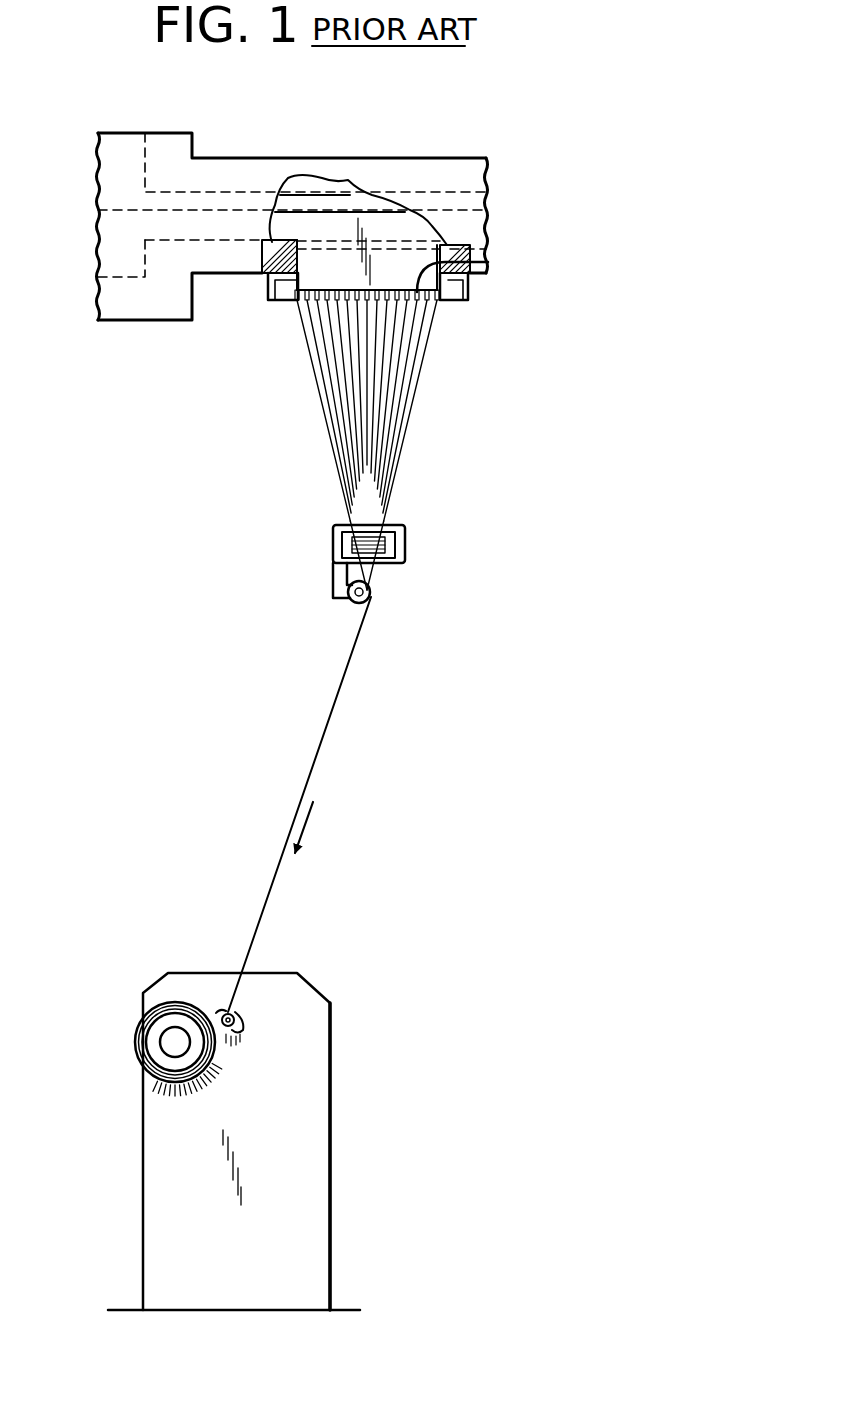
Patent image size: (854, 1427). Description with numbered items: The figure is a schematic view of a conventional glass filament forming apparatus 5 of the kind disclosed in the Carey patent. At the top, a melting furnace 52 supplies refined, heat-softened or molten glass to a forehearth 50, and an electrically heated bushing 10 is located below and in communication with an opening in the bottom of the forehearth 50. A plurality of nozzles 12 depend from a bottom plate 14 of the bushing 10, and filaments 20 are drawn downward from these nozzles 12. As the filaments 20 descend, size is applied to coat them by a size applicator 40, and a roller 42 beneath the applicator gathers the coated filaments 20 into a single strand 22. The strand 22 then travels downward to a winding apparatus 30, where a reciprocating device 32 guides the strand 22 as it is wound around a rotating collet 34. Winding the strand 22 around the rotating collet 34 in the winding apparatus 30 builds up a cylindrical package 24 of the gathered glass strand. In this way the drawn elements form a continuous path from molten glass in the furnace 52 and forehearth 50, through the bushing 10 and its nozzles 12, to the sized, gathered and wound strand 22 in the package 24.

The filament forming apparatus 5 is at (125, 486).
The bushing 10 is at (472, 335).
The nozzles 12 is at (297, 302).
The bottom plate 14 is at (455, 262).
The filaments 20 is at (372, 444).
The strand 22 is at (343, 677).
The cylindrical package 24 is at (150, 1060).
The winding apparatus 30 is at (143, 1145).
The reciprocating device 32 is at (237, 1018).
The rotating collet 34 is at (160, 1042).
The size applicator 40 is at (340, 527).
The roller 42 is at (372, 592).
The forehearth 50 is at (272, 240).
The melting furnace 52 is at (155, 321).